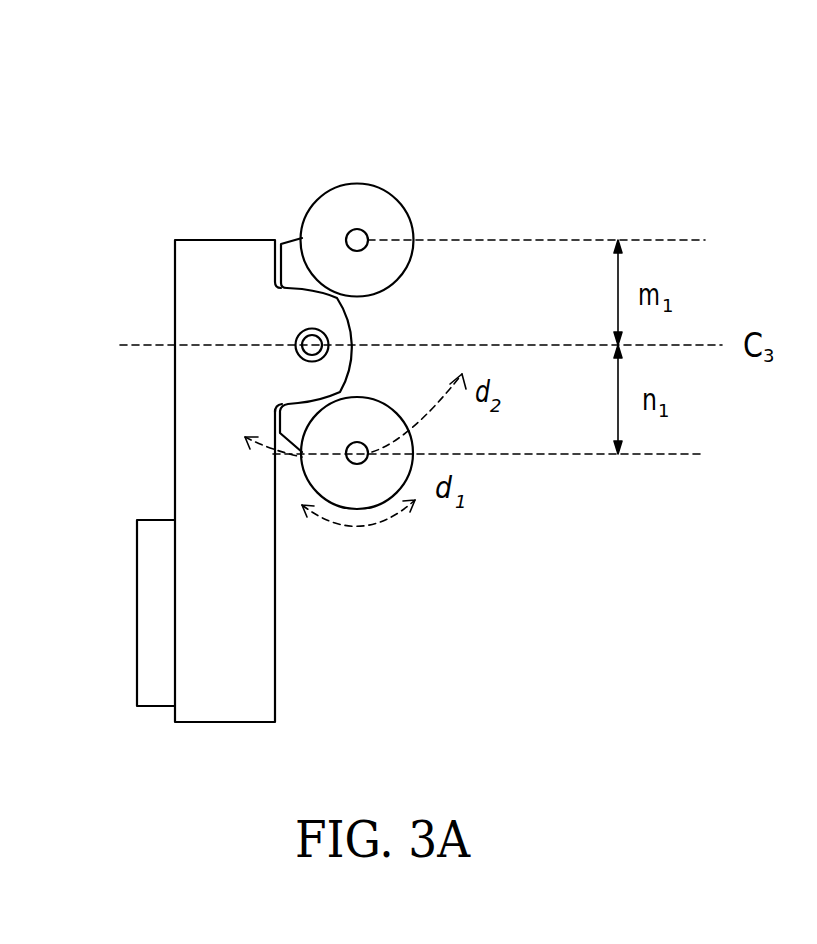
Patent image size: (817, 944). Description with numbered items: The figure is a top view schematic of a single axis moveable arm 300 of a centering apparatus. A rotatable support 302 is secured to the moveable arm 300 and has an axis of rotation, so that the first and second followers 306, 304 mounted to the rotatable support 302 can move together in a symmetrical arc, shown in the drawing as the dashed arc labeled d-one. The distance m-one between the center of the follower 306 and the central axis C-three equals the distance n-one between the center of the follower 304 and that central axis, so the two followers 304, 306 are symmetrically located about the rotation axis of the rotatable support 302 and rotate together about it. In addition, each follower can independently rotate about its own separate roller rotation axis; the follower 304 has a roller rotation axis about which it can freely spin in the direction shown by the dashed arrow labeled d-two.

The moveable arm 300 is at (232, 688).
The rotatable support 302 is at (295, 268).
The follower 304 is at (373, 425).
The follower 306 is at (358, 210).